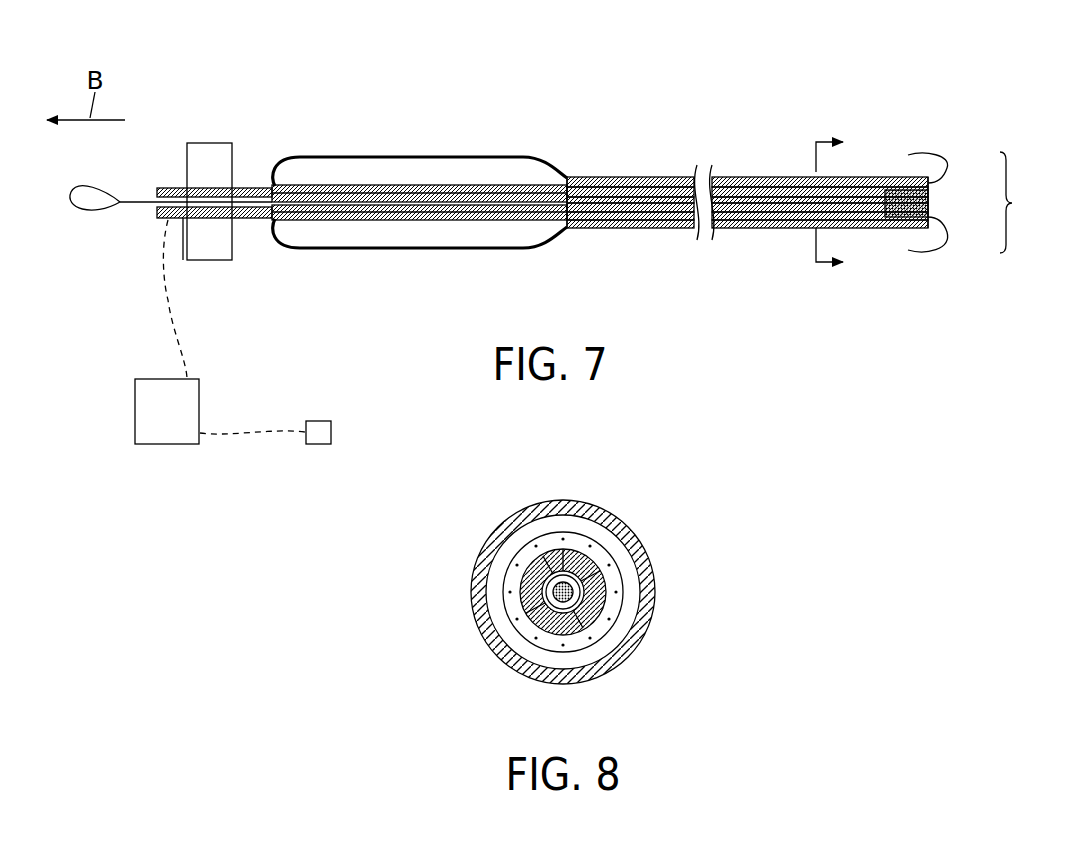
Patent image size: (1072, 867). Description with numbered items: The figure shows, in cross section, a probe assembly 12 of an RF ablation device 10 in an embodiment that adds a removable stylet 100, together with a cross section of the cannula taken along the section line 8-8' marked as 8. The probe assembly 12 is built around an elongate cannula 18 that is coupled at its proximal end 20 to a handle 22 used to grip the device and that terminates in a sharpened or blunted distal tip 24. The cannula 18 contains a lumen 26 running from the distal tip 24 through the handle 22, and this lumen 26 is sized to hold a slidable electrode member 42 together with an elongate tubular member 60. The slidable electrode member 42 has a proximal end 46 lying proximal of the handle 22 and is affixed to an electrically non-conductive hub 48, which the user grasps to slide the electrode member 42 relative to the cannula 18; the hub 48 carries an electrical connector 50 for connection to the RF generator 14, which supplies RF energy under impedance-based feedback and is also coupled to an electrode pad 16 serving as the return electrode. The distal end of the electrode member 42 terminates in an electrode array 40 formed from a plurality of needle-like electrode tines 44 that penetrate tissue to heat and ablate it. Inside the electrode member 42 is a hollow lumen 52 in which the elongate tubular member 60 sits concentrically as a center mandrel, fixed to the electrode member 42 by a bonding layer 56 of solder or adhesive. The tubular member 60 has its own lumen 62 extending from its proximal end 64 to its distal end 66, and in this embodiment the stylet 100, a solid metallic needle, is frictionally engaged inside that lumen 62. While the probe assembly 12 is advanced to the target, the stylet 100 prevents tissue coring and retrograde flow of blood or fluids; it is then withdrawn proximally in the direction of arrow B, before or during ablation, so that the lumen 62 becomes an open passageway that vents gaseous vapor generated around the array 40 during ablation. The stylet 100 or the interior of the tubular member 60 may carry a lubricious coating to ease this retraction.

In FIG. 7, the section line 8-8' 8 is at (828, 202).
In FIG. 7, the RF ablation device 10 is at (515, 122).
In FIG. 7, the probe assembly 12 is at (415, 253).
In FIG. 7, the RF generator 14 is at (167, 445).
In FIG. 7, the electrode pad 16 is at (318, 421).
In FIG. 7, the elongate cannula 18 is at (750, 228).
In FIG. 8, the elongate cannula 18 is at (632, 532).
In FIG. 7, the proximal end 20 is at (572, 228).
In FIG. 7, the handle 22 is at (413, 157).
In FIG. 7, the distal tip 24 is at (928, 230).
In FIG. 7, the lumen 26 is at (652, 187).
In FIG. 8, the lumen 26 is at (630, 585).
In FIG. 7, the electrode array 40 is at (1025, 202).
In FIG. 7, the slidable electrode member 42 is at (588, 187).
In FIG. 8, the slidable electrode member 42 is at (585, 543).
In FIG. 7, the electrode tines 44 is at (933, 154).
In FIG. 7, the proximal end 46 is at (183, 188).
In FIG. 7, the hub 48 is at (210, 143).
In FIG. 7, the electrical connector 50 is at (185, 260).
In FIG. 7, the lumen 52 is at (628, 216).
In FIG. 8, the lumen 52 is at (568, 637).
In FIG. 8, the bonding layer 56 is at (607, 603).
In FIG. 7, the elongate tubular member 60 is at (780, 190).
In FIG. 8, the elongate tubular member 60 is at (562, 567).
In FIG. 7, the lumen 62 is at (157, 210).
In FIG. 8, the lumen 62 is at (520, 573).
In FIG. 7, the proximal end 64 is at (157, 193).
In FIG. 7, the distal end 66 is at (928, 192).
In FIG. 7, the removable stylet 100 is at (120, 204).
In FIG. 8, the removable stylet 100 is at (520, 617).